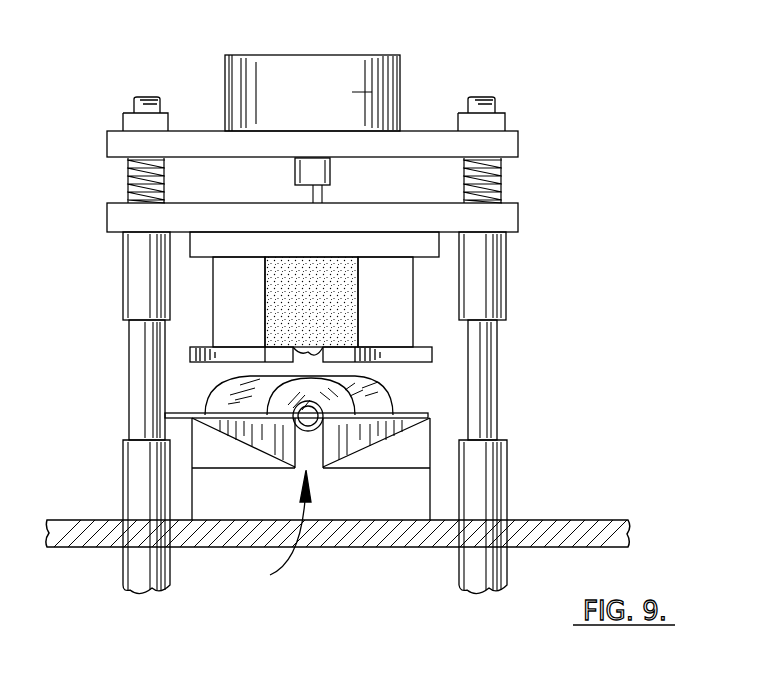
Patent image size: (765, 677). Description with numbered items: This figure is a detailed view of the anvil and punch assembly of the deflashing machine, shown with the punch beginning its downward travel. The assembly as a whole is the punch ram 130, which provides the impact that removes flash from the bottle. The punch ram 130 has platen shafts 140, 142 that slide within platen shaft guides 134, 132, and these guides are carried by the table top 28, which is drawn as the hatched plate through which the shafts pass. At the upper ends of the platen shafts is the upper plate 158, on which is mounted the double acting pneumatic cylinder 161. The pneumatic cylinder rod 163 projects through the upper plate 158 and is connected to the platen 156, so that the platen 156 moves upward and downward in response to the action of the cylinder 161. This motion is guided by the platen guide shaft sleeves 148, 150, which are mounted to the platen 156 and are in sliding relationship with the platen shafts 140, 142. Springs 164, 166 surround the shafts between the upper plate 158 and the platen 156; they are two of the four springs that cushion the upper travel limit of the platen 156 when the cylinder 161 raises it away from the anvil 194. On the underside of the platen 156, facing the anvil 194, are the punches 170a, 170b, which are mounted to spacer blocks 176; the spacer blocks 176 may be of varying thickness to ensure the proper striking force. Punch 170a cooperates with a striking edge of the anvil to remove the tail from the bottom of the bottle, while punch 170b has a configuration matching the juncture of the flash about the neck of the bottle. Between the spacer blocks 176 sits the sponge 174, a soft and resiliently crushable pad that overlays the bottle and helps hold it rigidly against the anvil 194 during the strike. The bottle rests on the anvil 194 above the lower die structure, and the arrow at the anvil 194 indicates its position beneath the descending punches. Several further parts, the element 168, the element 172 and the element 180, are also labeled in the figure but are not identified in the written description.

The punch ram 130 is at (563, 313).
The platen shaft guide 132 is at (477, 485).
The platen shaft guide 134 is at (136, 472).
The platen shaft 140 is at (485, 380).
The platen shaft 142 is at (140, 368).
The platen guide shaft sleeve 148 is at (487, 278).
The platen guide shaft sleeve 150 is at (135, 265).
The platen 156 is at (240, 213).
The upper plate 158 is at (502, 140).
The double acting pneumatic cylinder 161 is at (396, 82).
The pneumatic cylinder rod 163 is at (336, 195).
The spring 164 is at (502, 183).
The spring 166 is at (128, 173).
The upper die block 168 is at (287, 243).
The punch 170a is at (232, 357).
The punch 170b is at (458, 395).
The bulb body 172 is at (375, 408).
The sponge 174 is at (329, 311).
The spacer blocks 176 is at (254, 311).
The lower die block 180 is at (297, 466).
The anvil 194 is at (270, 529).
The table top 28 is at (375, 535).